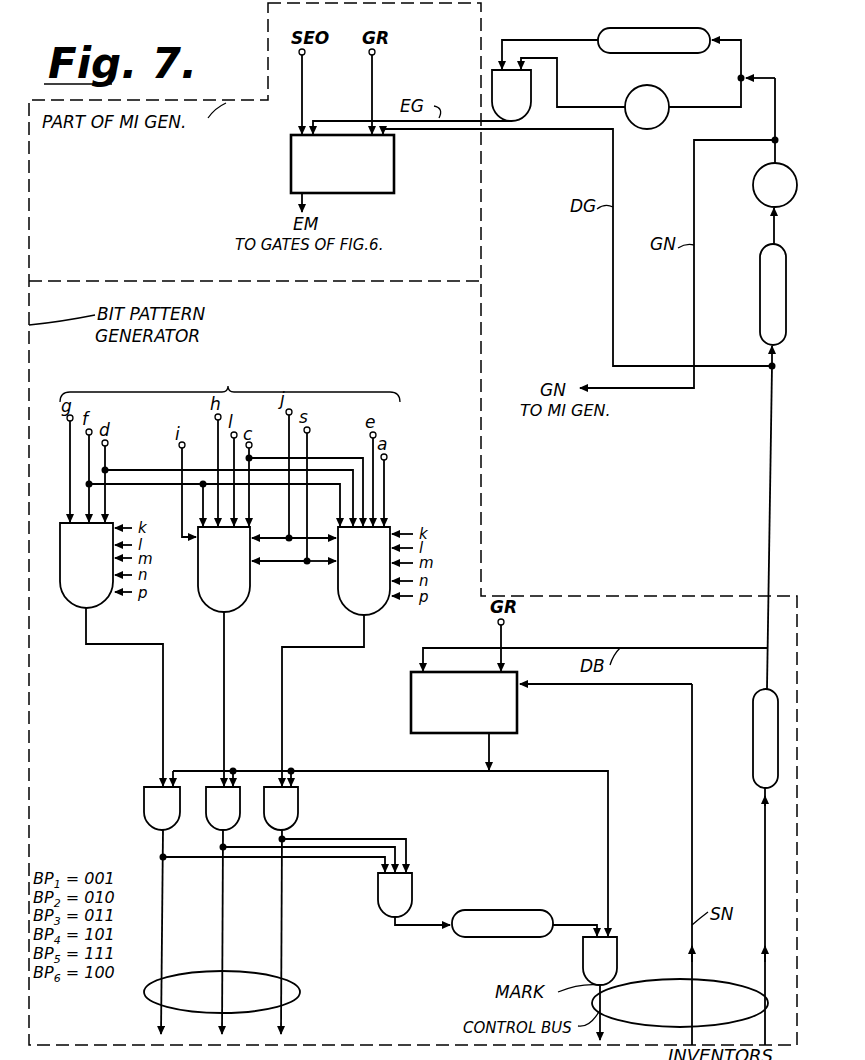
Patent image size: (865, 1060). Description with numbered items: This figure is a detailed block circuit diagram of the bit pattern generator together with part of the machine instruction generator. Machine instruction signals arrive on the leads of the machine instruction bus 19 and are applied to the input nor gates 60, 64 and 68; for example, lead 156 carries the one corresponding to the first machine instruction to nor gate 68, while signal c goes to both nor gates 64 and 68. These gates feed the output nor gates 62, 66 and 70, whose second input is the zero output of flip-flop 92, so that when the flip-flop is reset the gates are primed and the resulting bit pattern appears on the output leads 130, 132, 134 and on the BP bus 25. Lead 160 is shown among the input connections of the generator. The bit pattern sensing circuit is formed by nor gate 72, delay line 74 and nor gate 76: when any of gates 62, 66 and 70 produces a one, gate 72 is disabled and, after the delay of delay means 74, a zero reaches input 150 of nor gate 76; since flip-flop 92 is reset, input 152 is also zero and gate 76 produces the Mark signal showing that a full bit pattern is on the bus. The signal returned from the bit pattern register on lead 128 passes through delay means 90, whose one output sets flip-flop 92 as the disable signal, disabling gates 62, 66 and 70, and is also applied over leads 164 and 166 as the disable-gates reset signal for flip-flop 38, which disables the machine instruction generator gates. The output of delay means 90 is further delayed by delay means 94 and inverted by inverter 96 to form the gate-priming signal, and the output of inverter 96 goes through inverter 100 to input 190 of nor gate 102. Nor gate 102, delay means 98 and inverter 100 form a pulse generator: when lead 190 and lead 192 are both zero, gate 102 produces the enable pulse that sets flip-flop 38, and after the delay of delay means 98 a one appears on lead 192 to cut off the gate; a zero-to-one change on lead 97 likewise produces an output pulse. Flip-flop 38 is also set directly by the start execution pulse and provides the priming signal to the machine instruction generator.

The machine instruction bus 19 is at (230, 385).
The BP bus 25 is at (300, 992).
The flip-flop 38 is at (396, 174).
The nor gate 60 is at (73, 604).
The nor gate 62 is at (144, 805).
The nor gate 64 is at (212, 604).
The nor gate 66 is at (215, 830).
The nor gate 68 is at (354, 608).
The nor gate 70 is at (298, 812).
The nor gate 72 is at (412, 886).
The delay line 74 is at (521, 900).
The nor gate 76 is at (617, 956).
The delay means 90 is at (753, 762).
The flip-flop 92 is at (411, 712).
The delay means 94 is at (760, 318).
The inverter 96 is at (755, 200).
The lead 97 is at (770, 78).
The delay means 98 is at (656, 30).
The inverter 100 is at (630, 128).
The nor gate 102 is at (492, 82).
The lead 128 is at (765, 845).
The output lead 130 is at (161, 962).
The output lead 132 is at (222, 950).
The output lead 134 is at (281, 946).
The input lead 150 is at (578, 901).
The input lead 152 is at (609, 875).
The lead 156 is at (385, 492).
The input line 160 is at (237, 518).
The lead 164 is at (768, 462).
The lead 166 is at (613, 268).
The input lead 190 is at (557, 84).
The input lead 192 is at (556, 38).